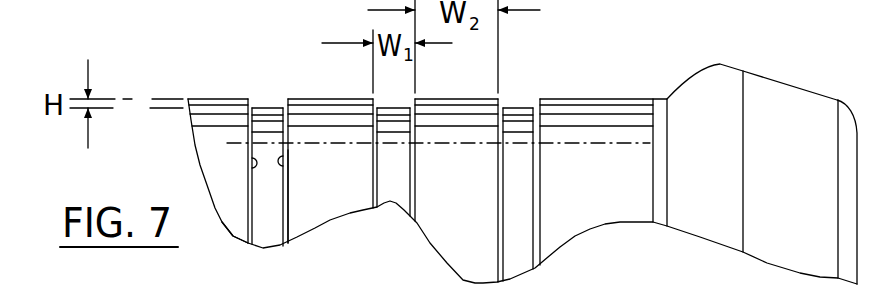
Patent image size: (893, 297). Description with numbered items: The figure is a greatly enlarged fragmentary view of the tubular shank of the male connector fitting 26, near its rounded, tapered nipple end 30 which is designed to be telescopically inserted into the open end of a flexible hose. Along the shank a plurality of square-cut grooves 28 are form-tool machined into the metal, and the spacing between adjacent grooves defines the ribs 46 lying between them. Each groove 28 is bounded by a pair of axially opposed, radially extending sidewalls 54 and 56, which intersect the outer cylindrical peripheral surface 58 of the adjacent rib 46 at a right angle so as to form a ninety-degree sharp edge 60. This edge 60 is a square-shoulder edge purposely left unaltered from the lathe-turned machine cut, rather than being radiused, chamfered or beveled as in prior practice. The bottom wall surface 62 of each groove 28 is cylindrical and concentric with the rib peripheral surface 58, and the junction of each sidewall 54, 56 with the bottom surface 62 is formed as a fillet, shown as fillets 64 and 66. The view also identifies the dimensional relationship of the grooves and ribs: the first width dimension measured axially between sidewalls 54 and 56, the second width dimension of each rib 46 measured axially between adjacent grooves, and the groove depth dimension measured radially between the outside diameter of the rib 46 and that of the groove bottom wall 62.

The male connector fitting 26 is at (588, 96).
The grooves 28 is at (263, 102).
The nipple end 30 is at (768, 77).
The ribs 46 is at (448, 97).
The groove sidewall 54 is at (250, 173).
The groove sidewall 56 is at (286, 158).
The outer cylindrical peripheral surface 58 is at (200, 97).
The sharp edge 60 is at (247, 98).
The bottom wall surface 62 is at (267, 245).
The fillet 64 is at (250, 204).
The fillet 66 is at (288, 195).